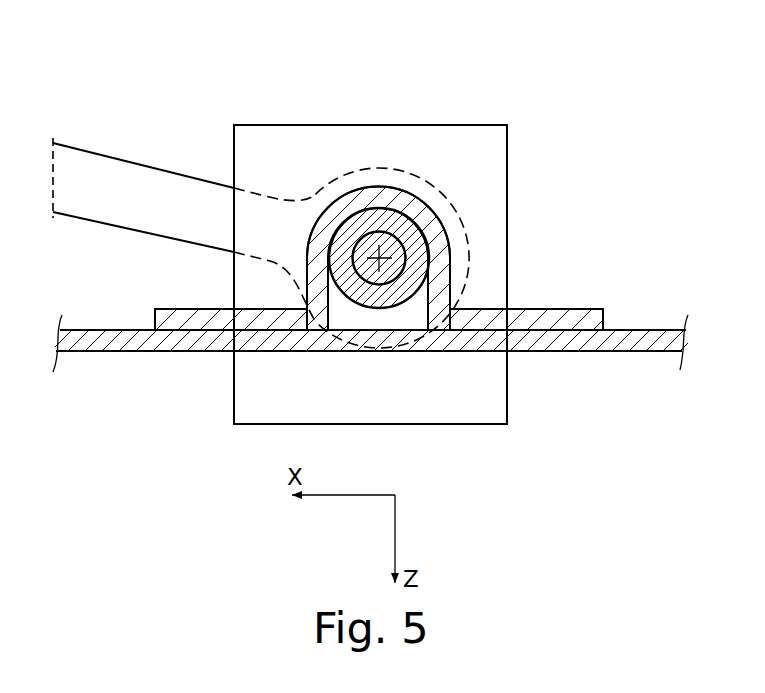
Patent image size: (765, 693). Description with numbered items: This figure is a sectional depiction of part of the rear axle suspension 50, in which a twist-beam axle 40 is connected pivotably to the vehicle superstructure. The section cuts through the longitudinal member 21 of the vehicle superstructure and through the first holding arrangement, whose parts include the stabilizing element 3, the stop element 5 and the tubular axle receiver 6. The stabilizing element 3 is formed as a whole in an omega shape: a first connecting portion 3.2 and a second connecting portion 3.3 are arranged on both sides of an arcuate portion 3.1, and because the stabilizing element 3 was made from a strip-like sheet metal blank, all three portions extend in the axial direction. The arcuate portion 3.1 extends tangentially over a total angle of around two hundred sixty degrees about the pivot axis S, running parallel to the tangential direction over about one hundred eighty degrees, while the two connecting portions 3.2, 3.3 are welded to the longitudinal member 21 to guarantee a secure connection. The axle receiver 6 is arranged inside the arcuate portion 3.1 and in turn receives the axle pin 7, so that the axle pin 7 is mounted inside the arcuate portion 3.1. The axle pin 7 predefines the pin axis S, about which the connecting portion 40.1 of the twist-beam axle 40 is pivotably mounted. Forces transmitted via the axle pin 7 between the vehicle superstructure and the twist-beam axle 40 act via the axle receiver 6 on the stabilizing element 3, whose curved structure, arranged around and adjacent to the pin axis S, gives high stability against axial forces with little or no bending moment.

The stabilizing element 3 is at (363, 200).
The arcuate portion 3.1 is at (417, 185).
The first connecting portion 3.2 is at (173, 308).
The second connecting portion 3.3 is at (580, 307).
The stop element 5 is at (392, 135).
The axle receiver 6 is at (423, 213).
The axle pin 7 is at (382, 262).
The longitudinal member 21 is at (112, 340).
The twist-beam axle 40 is at (132, 178).
The connecting portion 40.1 is at (195, 150).
The rear axle suspension 50 is at (473, 68).
The pin axis S is at (372, 262).